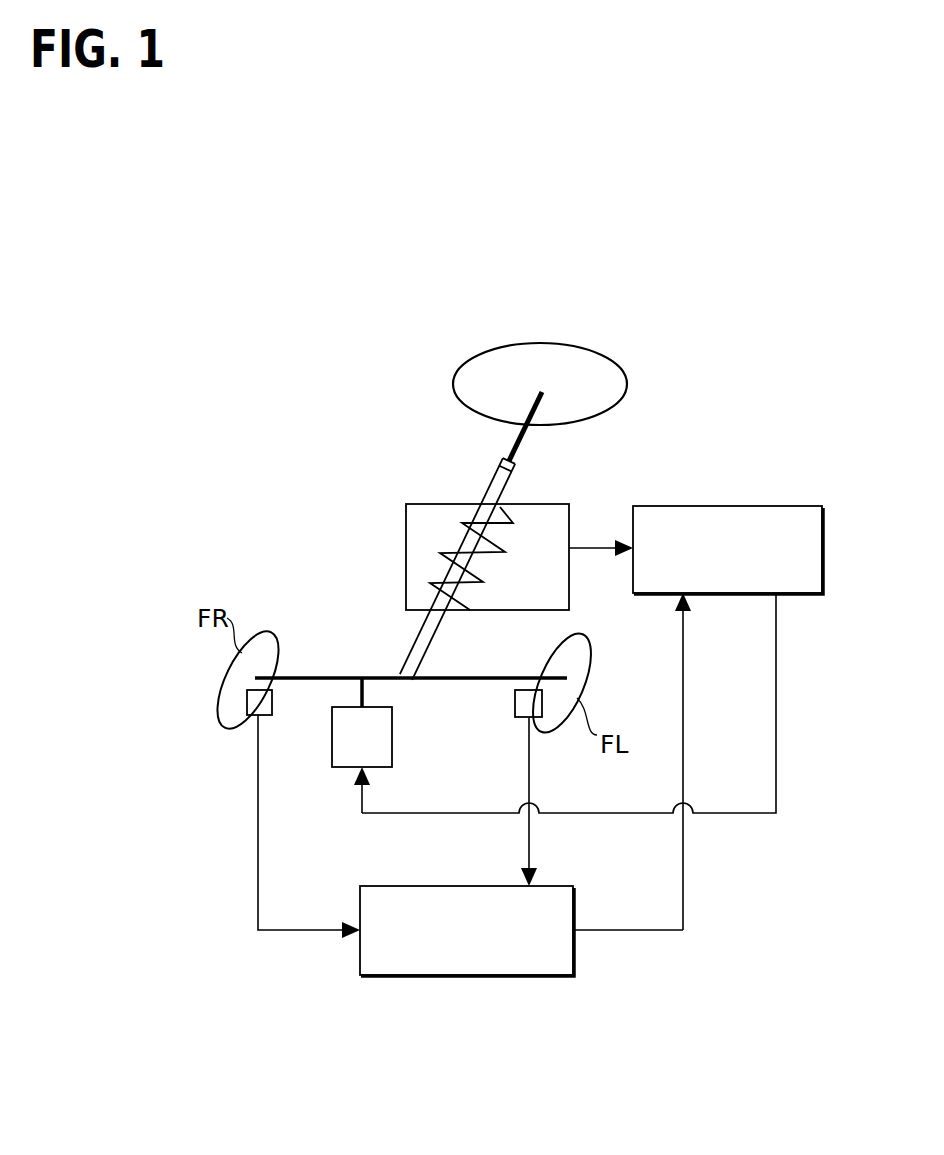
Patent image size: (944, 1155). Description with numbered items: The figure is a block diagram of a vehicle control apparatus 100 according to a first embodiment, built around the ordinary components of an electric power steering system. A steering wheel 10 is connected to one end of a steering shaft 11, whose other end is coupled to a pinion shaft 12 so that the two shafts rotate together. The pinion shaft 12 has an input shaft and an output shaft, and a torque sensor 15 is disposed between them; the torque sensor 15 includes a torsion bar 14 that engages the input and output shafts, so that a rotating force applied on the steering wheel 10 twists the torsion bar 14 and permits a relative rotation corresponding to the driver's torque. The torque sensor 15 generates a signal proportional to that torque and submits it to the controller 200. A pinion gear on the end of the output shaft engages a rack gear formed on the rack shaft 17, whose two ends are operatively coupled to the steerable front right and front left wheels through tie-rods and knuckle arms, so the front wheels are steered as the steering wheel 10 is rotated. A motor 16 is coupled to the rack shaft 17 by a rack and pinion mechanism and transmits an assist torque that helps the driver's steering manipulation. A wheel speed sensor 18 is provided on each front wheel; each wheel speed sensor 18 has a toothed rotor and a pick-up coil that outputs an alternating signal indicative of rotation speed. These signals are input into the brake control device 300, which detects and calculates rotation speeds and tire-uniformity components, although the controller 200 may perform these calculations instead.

The vehicle control apparatus 100 is at (392, 367).
The steering wheel 10 is at (530, 345).
The steering shaft 11 is at (515, 445).
The pinion shaft 12 is at (503, 468).
The torsion bar 14 is at (463, 538).
The torque sensor 15 is at (405, 577).
The motor 16 is at (332, 737).
The rack shaft 17 is at (310, 675).
The wheel speed sensor 18 is at (247, 708).
The controller 200 is at (777, 505).
The brake control device 300 is at (575, 947).